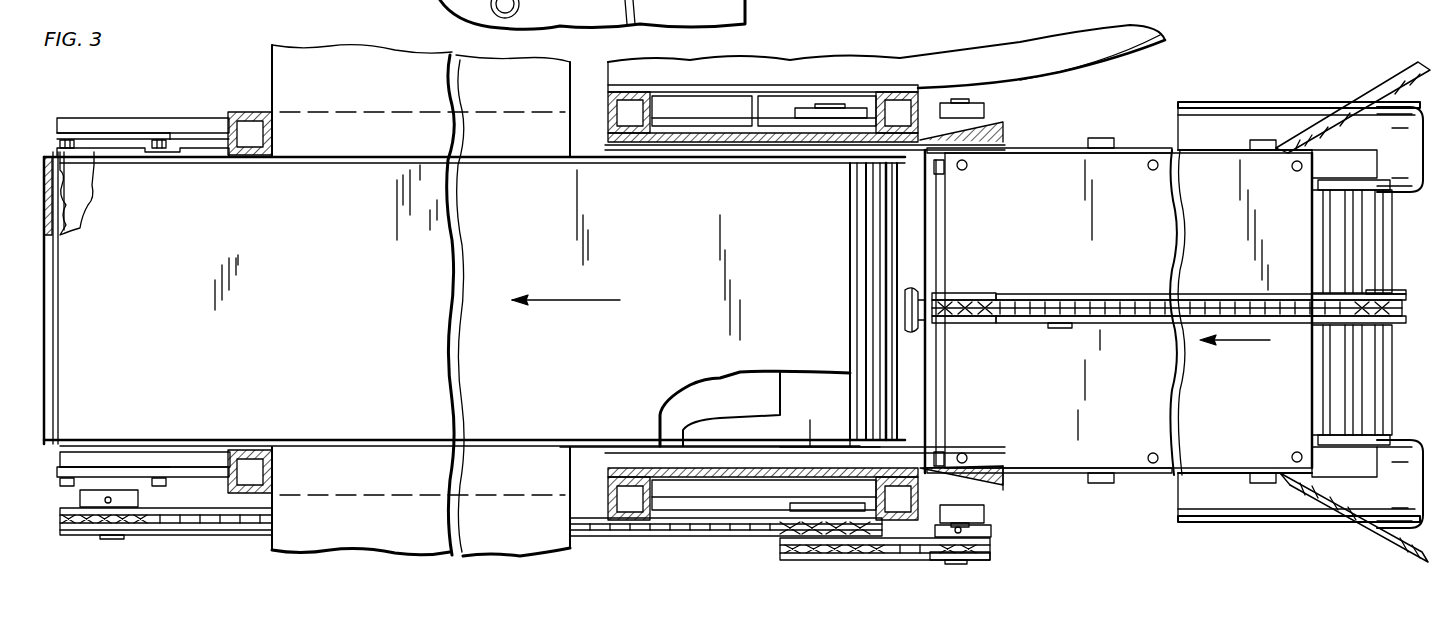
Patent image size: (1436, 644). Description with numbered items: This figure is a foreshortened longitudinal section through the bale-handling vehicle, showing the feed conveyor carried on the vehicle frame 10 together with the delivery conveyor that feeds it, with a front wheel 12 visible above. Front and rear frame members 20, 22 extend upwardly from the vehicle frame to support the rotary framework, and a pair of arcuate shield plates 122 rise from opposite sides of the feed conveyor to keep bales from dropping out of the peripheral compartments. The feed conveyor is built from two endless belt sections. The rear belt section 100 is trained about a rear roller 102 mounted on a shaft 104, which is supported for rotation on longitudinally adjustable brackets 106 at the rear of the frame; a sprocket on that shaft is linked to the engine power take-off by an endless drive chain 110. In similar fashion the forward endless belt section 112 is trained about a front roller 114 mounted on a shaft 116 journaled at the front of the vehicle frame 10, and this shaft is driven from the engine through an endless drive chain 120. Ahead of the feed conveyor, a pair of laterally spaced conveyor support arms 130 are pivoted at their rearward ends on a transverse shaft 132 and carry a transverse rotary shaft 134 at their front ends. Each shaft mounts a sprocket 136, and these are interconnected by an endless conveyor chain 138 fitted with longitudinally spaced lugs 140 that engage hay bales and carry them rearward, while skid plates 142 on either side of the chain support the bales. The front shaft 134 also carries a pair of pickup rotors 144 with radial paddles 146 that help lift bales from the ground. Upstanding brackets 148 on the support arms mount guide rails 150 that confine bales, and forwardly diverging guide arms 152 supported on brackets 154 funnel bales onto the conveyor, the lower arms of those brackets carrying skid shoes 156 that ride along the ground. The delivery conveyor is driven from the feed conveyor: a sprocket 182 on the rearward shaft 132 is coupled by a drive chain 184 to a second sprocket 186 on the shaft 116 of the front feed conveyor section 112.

The frame 10 is at (590, 125).
The front wheels 12 is at (735, 10).
The front frame member 20 is at (612, 95).
The rear frame member 22 is at (238, 108).
The rear belt section 100 is at (215, 187).
The rear roller 102 is at (70, 193).
The shaft 104 is at (125, 540).
The longitudinally adjustable brackets 106 is at (195, 126).
The endless drive chain 110 is at (250, 530).
The forward endless belt section 112 is at (808, 304).
The front roller 114 is at (822, 411).
The shaft 116 is at (832, 452).
The endless drive chain 120 is at (696, 536).
The arcuate shield plates 122 is at (495, 78).
The conveyor support arms 130 is at (1368, 158).
The transverse shaft 132 is at (960, 99).
The transverse rotary shaft 134 is at (1360, 185).
The sprocket 136 is at (985, 292).
The endless conveyor chain 138 is at (1140, 300).
The lugs 140 is at (1057, 330).
The skid plates 142 is at (1200, 168).
The pickup rotors 144 is at (1375, 232).
The radial paddles 146 is at (1358, 250).
The upstanding brackets 148 is at (1100, 138).
The guide rails 150 is at (1033, 148).
The guide arms 152 is at (1390, 88).
The brackets 154 is at (1263, 483).
The skid shoes 156 is at (1272, 118).
The sprocket 182 is at (990, 533).
The drive chain 184 is at (990, 556).
The second sprocket 186 is at (778, 558).